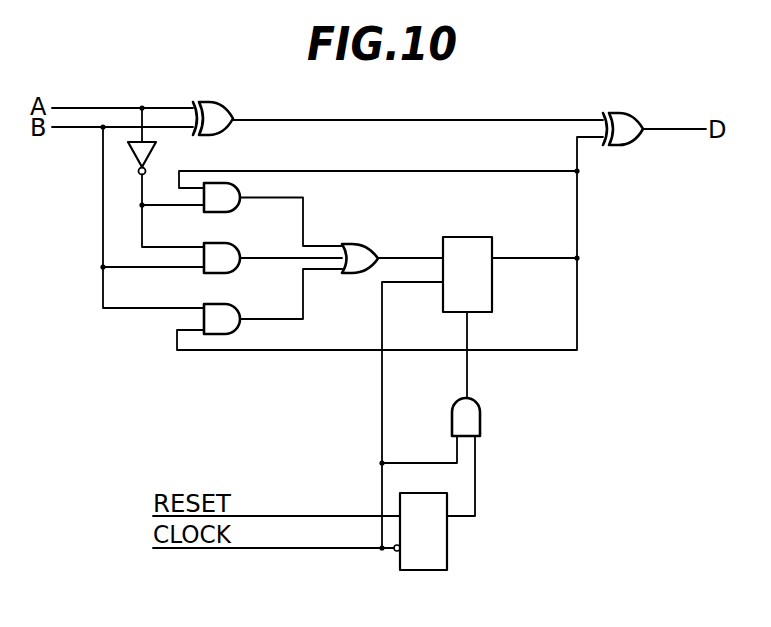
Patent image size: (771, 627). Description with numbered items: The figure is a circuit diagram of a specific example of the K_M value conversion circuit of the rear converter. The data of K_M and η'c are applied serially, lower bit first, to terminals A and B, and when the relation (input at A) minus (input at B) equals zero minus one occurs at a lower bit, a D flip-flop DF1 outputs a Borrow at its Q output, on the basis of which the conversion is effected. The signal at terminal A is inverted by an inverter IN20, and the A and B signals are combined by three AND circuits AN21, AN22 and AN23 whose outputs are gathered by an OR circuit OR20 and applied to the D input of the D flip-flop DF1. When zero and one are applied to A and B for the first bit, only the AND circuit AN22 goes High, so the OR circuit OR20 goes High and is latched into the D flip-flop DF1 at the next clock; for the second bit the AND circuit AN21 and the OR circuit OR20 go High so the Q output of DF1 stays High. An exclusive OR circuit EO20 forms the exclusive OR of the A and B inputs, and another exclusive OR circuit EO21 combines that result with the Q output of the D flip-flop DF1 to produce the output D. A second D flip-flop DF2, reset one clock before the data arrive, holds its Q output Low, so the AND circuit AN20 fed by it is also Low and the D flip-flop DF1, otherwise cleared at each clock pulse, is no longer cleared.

The exclusive OR circuit EO20 is at (224, 112).
The exclusive OR circuit EO21 is at (626, 122).
The inverter IN20 is at (152, 156).
The AND circuit AN21 is at (235, 203).
The AND circuit AN22 is at (235, 263).
The AND circuit AN23 is at (235, 323).
The OR circuit OR20 is at (358, 250).
The D flip-flop DF1 is at (468, 237).
The AND circuit AN20 is at (470, 425).
The D flip-flop DF2 is at (446, 553).